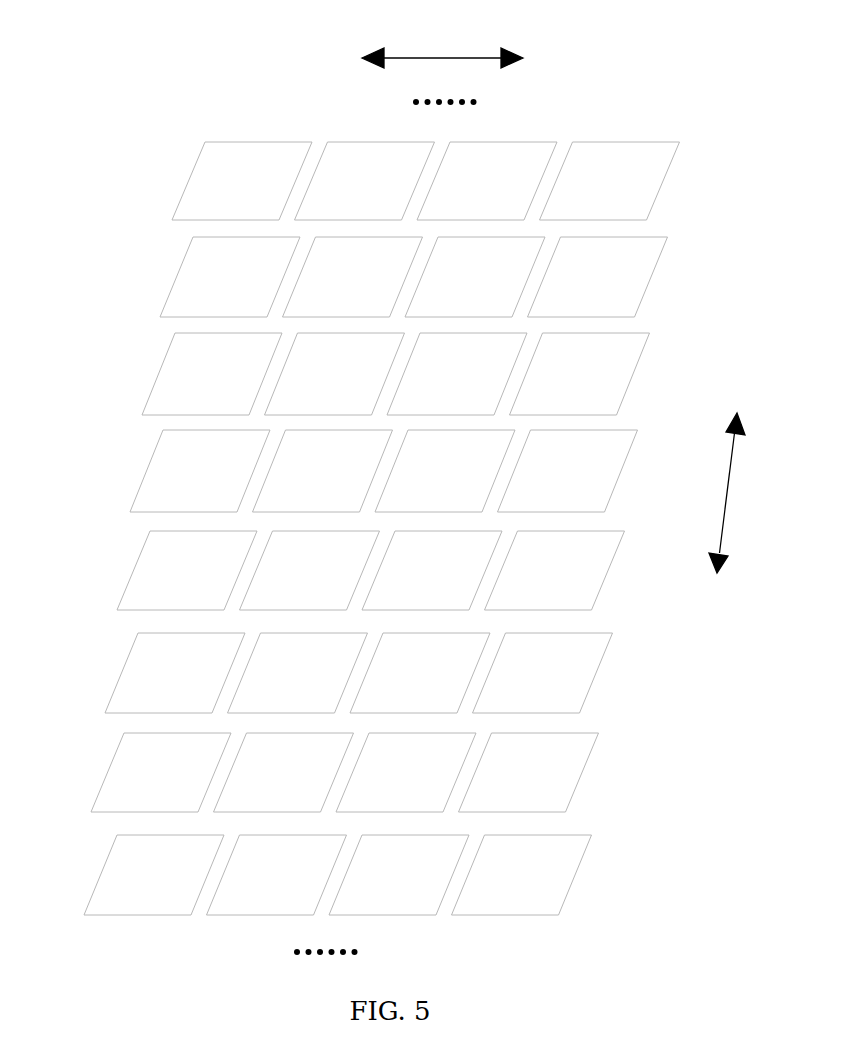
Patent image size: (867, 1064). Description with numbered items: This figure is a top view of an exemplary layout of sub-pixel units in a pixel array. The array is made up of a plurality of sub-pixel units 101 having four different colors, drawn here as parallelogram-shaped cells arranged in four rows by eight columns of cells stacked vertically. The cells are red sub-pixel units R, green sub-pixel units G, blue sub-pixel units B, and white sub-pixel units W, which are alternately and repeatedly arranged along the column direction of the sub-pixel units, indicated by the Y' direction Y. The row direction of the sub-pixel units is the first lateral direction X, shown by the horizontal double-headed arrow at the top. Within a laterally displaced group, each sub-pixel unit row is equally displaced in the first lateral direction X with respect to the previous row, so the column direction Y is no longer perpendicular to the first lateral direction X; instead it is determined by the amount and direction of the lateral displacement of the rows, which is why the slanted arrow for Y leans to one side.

The sub-pixel unit 101 is at (182, 377).
The red sub-pixel unit R is at (398, 376).
The green sub-pixel unit G is at (386, 475).
The blue sub-pixel unit B is at (370, 572).
The white sub-pixel unit W is at (361, 672).
The first lateral direction X is at (442, 42).
The Y' direction Y is at (711, 477).